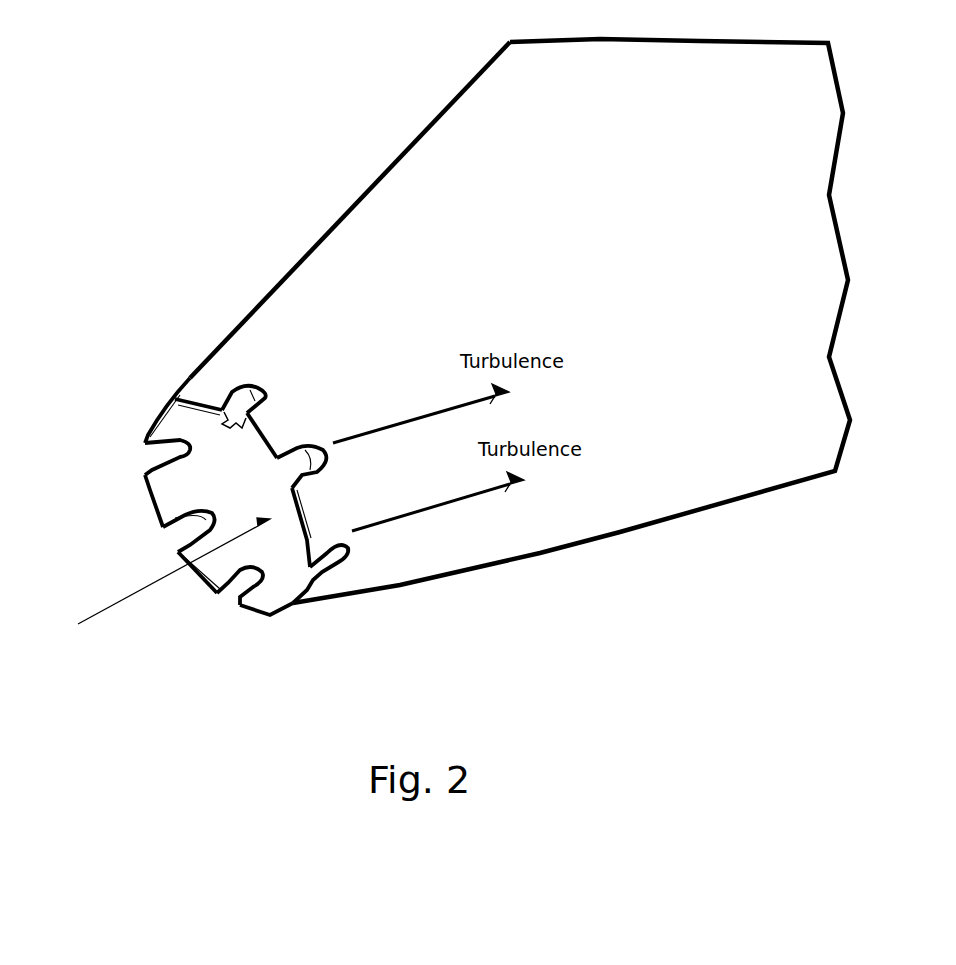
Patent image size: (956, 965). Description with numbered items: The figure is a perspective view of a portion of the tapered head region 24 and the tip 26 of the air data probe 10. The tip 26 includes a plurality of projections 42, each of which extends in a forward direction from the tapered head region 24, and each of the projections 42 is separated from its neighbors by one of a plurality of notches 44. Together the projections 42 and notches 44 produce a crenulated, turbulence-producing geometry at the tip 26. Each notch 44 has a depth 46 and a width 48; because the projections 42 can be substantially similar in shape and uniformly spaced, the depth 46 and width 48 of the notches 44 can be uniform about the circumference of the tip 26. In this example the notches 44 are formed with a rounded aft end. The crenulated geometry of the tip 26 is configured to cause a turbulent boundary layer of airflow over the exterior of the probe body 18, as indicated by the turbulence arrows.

The air data probe 10 is at (212, 120).
The probe body 18 is at (660, 530).
The tapered head region 24 is at (331, 224).
The tip 26 is at (130, 433).
The projections 42 is at (207, 415).
The notches 44 is at (252, 394).
The depth 46 is at (265, 402).
The width 48 is at (227, 431).